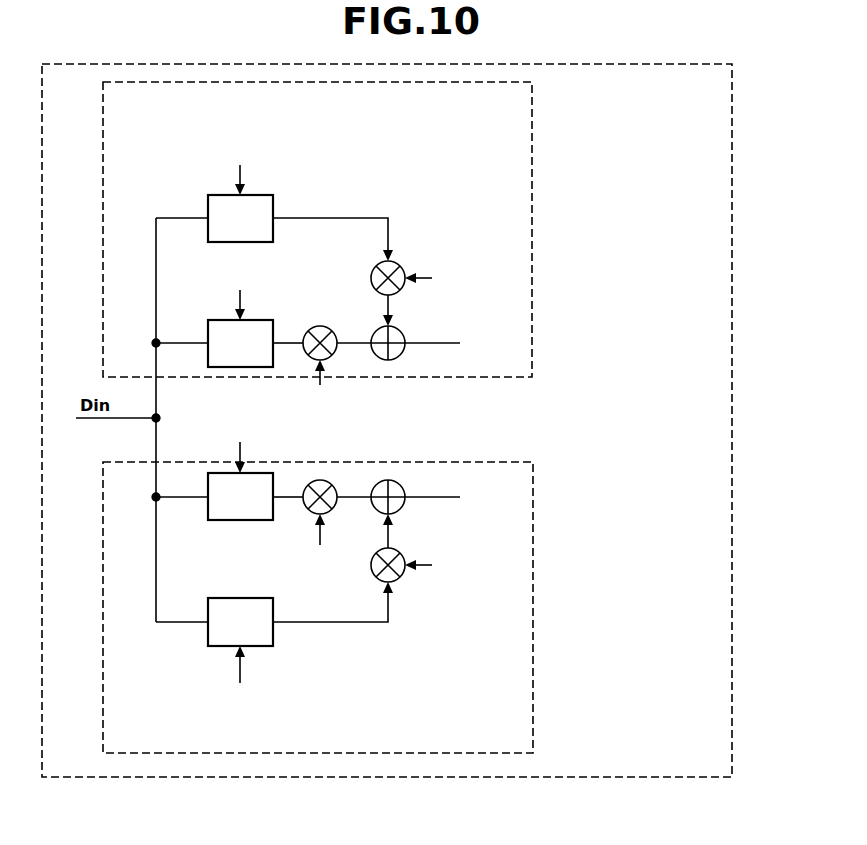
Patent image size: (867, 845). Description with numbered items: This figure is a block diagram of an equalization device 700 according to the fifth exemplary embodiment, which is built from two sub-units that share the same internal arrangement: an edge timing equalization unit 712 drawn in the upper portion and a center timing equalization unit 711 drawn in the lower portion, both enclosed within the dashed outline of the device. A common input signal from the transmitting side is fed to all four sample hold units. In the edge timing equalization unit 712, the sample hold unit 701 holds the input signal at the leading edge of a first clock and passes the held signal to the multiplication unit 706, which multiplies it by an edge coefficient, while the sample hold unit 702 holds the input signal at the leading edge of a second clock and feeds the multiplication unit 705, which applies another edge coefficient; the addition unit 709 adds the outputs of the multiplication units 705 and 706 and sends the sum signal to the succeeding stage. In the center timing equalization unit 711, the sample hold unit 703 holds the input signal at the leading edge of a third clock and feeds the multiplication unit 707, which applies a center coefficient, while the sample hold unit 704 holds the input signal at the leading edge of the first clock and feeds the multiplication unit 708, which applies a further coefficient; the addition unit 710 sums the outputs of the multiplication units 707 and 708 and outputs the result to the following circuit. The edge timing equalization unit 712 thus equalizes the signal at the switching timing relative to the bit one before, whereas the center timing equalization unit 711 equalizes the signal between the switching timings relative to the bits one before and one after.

The equalization device 700 is at (732, 675).
The sample hold unit 701 is at (208, 208).
The sample hold unit 702 is at (208, 367).
The sample hold unit 703 is at (220, 521).
The sample hold unit 704 is at (273, 636).
The multiplication unit 705 is at (320, 326).
The multiplication unit 706 is at (404, 270).
The multiplication unit 707 is at (326, 481).
The multiplication unit 708 is at (400, 578).
The addition unit 709 is at (400, 355).
The addition unit 710 is at (392, 480).
The center timing equalization unit 711 is at (533, 612).
The edge timing equalization unit 712 is at (533, 178).